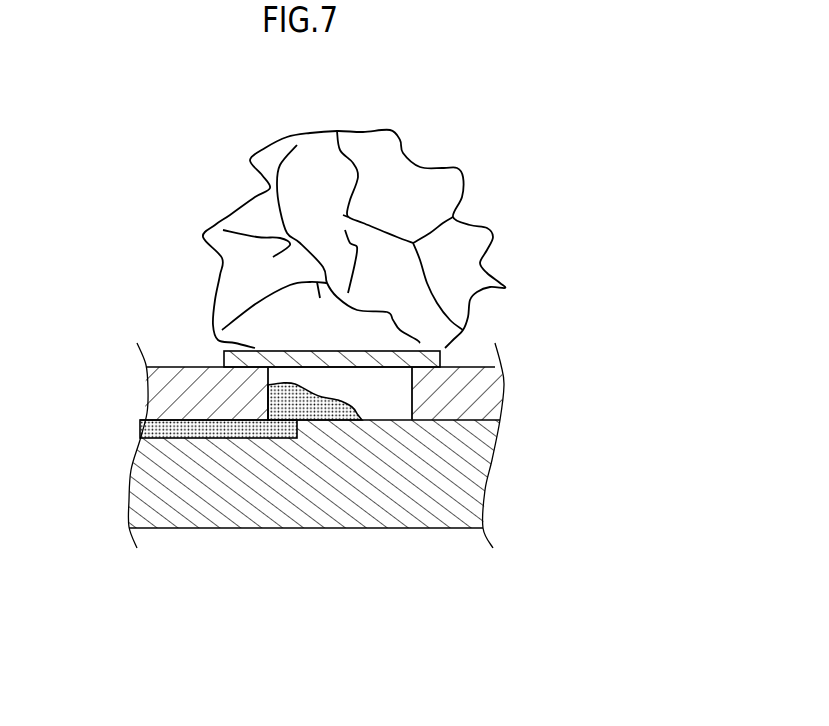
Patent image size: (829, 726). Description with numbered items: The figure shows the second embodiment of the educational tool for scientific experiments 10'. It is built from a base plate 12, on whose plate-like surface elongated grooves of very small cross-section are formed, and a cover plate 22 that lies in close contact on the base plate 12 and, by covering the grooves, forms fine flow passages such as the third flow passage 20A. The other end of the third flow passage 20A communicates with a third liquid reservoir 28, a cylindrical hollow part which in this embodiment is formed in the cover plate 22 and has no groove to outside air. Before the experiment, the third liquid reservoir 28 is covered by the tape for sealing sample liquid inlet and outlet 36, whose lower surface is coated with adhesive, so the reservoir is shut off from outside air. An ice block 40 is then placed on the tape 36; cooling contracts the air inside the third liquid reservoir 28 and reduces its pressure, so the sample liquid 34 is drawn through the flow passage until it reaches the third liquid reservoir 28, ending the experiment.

The educational tool for scientific experiments 10' is at (349, 337).
The base plate 12 is at (485, 459).
The third flow passage 20A is at (187, 440).
The cover plate 22 is at (493, 395).
The third liquid reservoir 28 is at (367, 398).
The sample liquid 34 is at (305, 413).
The tape for sealing sample liquid inlet and outlet 36 is at (453, 359).
The ice block 40 is at (463, 188).